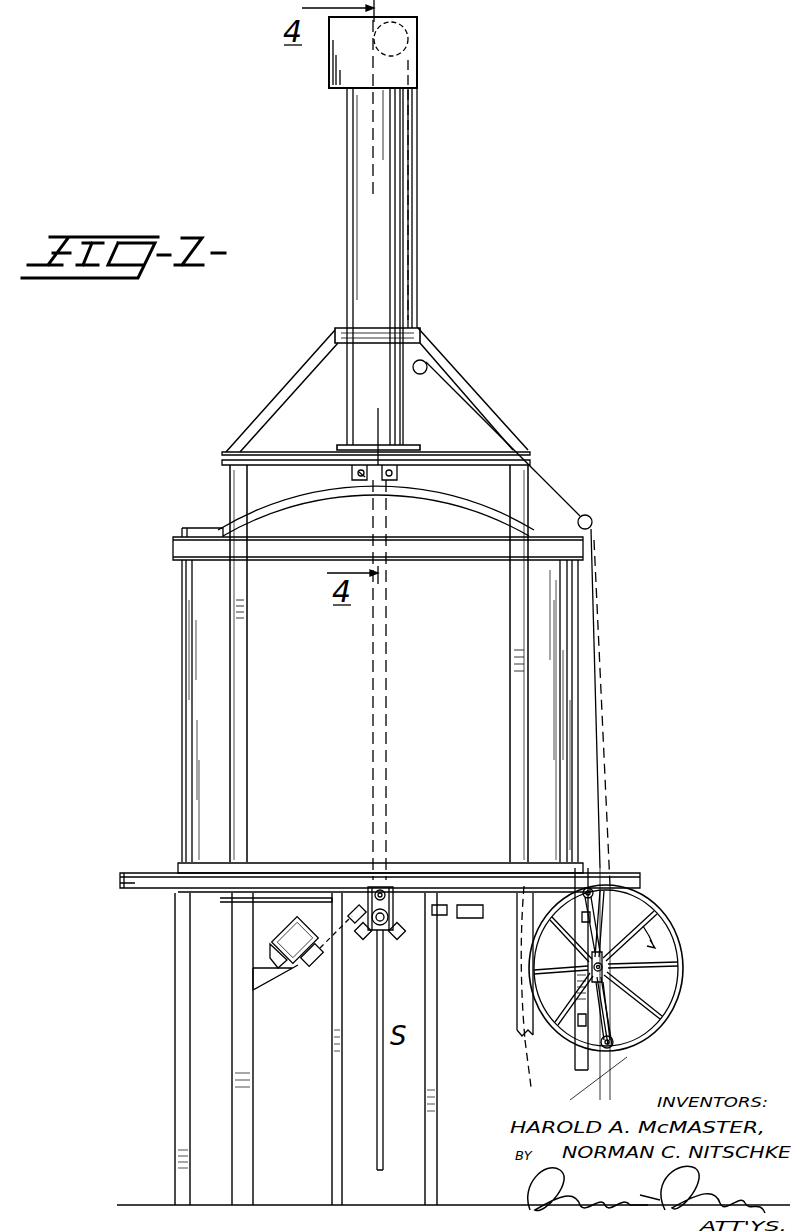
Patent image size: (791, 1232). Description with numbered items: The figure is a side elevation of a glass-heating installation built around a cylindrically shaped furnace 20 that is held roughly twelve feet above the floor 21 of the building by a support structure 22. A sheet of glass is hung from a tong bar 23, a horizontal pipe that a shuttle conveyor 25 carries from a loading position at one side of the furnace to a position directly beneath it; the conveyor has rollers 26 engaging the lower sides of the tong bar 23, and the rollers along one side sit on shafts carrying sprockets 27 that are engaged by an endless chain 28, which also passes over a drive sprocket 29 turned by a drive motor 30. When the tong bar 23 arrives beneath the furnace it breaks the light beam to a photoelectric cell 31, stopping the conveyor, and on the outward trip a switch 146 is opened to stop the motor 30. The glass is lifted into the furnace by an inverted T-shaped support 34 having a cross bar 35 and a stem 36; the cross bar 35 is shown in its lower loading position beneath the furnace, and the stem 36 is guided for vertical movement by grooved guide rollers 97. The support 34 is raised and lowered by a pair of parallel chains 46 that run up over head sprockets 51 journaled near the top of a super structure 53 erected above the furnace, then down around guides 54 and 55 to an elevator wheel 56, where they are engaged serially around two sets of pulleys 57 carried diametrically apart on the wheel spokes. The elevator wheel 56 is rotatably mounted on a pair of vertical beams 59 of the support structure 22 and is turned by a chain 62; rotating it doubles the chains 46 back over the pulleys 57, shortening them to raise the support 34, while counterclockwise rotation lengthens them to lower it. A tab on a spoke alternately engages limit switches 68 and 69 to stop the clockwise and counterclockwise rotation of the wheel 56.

The furnace 20 is at (174, 651).
The floor 21 is at (118, 1205).
The support structure 22 is at (174, 1022).
The tong bar 23 is at (388, 905).
The shuttle conveyor 25 is at (403, 940).
The rollers 26 is at (365, 940).
The sprockets 27 is at (358, 910).
The endless chain 28 is at (326, 925).
The drive sprocket 29 is at (300, 968).
The drive motor 30 is at (286, 930).
The photoelectric cell 31 is at (440, 916).
The inverted T-shaped support 34 is at (360, 485).
The cross bar 35 is at (380, 888).
The stem 36 is at (388, 615).
The chains 46 is at (414, 162).
The head sprockets 51 is at (410, 34).
The super structure 53 is at (346, 190).
The guide 54 is at (427, 366).
The guide 55 is at (593, 525).
The elevator wheel 56 is at (676, 920).
The pulleys 57 is at (595, 895).
The vertical beams 59 is at (576, 1070).
The chain 62 is at (515, 1066).
The limit switch 68 is at (576, 1020).
The limit switch 69 is at (582, 917).
The guide rollers 97 is at (396, 482).
The switch 146 is at (468, 918).